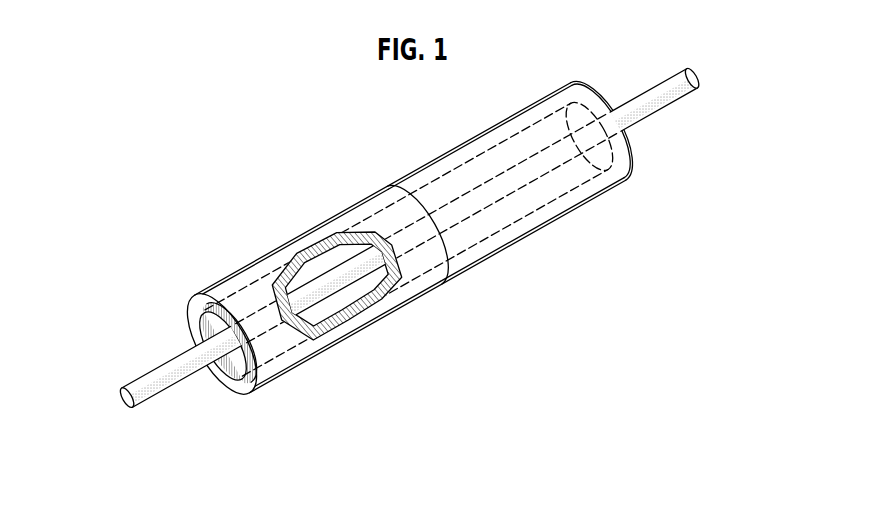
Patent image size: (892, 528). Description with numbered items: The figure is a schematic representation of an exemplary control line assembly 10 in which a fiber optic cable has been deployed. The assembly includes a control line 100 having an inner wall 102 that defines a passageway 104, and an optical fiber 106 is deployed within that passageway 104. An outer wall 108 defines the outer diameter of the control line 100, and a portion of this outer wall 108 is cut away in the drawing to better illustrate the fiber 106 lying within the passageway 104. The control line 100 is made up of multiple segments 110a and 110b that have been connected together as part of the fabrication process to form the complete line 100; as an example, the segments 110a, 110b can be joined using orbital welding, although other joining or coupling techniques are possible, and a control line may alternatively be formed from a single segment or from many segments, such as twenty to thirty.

The control line assembly 10 is at (329, 163).
The control line 100 is at (410, 304).
The inner wall 102 is at (231, 367).
The passageway 104 is at (209, 326).
The optical fiber 106 is at (160, 384).
The outer wall 108 is at (240, 282).
The segment 110a is at (322, 233).
The segment 110b is at (472, 148).